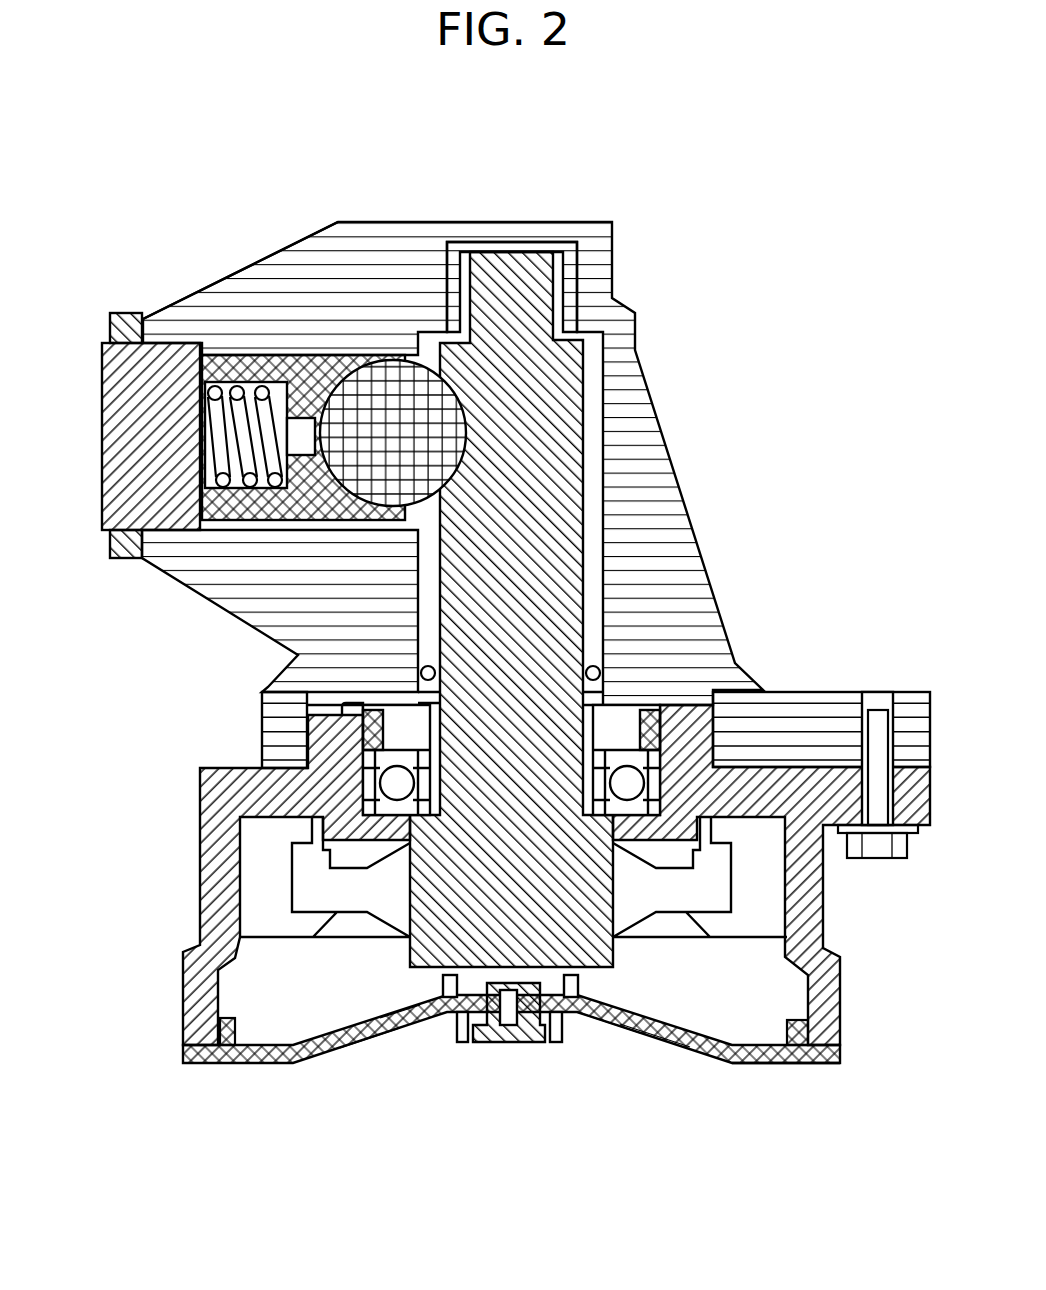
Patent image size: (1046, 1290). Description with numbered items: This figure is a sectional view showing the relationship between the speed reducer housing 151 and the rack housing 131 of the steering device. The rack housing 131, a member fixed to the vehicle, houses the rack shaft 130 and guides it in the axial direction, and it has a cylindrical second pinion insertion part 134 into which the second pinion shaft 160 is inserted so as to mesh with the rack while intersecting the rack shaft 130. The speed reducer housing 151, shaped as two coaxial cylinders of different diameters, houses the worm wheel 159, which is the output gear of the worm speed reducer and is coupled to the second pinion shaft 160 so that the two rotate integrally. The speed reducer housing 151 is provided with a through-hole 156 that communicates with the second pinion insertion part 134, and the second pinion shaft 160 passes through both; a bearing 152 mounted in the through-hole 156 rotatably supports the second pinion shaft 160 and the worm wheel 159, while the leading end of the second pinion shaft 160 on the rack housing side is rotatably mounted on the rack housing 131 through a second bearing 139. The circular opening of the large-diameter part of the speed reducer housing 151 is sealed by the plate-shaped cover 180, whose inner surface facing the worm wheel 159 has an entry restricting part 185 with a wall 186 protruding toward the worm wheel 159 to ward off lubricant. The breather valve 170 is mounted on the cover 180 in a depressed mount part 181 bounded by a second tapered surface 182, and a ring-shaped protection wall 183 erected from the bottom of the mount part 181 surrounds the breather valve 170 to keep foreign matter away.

The rack shaft 130 is at (385, 385).
The rack housing 131 is at (235, 268).
The second pinion insertion part 134 is at (700, 525).
The second bearing 139 is at (585, 275).
The speed reducer housing 151 is at (200, 880).
The bearing 152 is at (628, 790).
The through-hole 156 is at (345, 692).
The worm wheel 159 is at (735, 940).
The second pinion shaft 160 is at (375, 1034).
The breather valve 170 is at (520, 1045).
The cover 180 is at (770, 1065).
The mount part 181 is at (597, 1055).
The second tapered surface 182 is at (410, 1007).
The protection wall 183 is at (457, 1042).
The entry restricting part 185 is at (377, 992).
The wall 186 is at (580, 985).